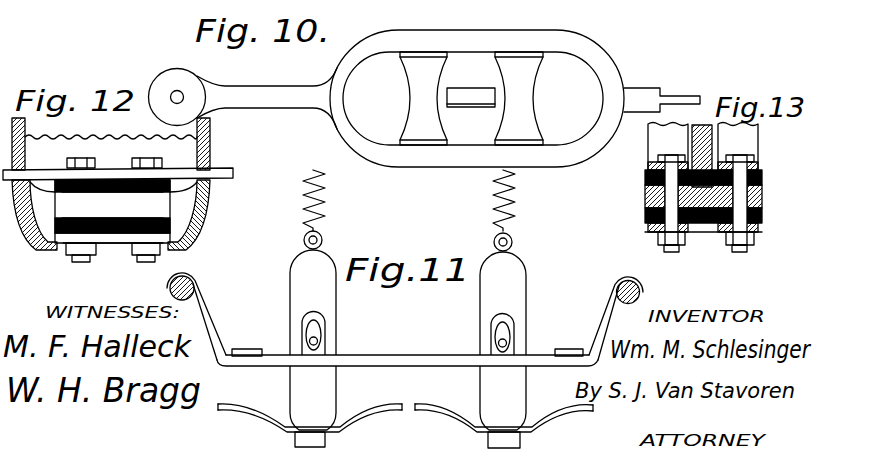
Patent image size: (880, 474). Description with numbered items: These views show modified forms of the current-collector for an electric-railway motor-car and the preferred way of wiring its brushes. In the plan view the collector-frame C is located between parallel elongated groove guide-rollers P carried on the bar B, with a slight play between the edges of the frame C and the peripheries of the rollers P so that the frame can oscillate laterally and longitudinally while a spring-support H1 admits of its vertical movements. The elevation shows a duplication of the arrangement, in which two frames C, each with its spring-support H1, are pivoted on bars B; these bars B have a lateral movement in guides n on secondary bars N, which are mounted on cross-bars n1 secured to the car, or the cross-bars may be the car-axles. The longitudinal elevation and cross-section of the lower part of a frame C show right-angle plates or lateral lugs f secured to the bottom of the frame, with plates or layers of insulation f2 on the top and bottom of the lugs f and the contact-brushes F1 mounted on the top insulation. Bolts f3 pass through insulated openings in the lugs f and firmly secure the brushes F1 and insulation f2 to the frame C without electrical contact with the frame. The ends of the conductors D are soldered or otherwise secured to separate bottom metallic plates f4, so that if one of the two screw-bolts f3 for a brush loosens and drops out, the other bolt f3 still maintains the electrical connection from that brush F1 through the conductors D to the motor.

In FIG. 10, the bar B is at (425, 98).
In FIG. 11, the bar B is at (407, 349).
In FIG. 10, the groove guide-rollers P is at (461, 98).
In FIG. 10, the collector-frame C is at (471, 87).
In FIG. 12, the collector-frame C is at (111, 128).
In FIG. 13, the collector-frame C is at (702, 148).
In FIG. 11, the collector-frame C is at (408, 330).
In FIG. 12, the contact-brush F1 is at (214, 165).
In FIG. 13, the contact-brush F1 is at (646, 143).
In FIG. 11, the contact-brush F1 is at (405, 426).
In FIG. 12, the conductors D is at (118, 204).
In FIG. 12, the lateral lugs f is at (112, 211).
In FIG. 13, the lateral lugs f is at (764, 198).
In FIG. 12, the plates of insulation f2 is at (147, 192).
In FIG. 13, the plates of insulation f2 is at (645, 213).
In FIG. 12, the bolts f3 is at (152, 255).
In FIG. 13, the bolts f3 is at (747, 256).
In FIG. 12, the bottom metallic plates f4 is at (108, 246).
In FIG. 13, the bottom metallic plates f4 is at (776, 232).
In FIG. 11, the spring-support H1 is at (424, 200).
In FIG. 11, the secondary bars N is at (405, 316).
In FIG. 11, the guides n is at (407, 344).
In FIG. 11, the cross-bars n1 is at (643, 292).